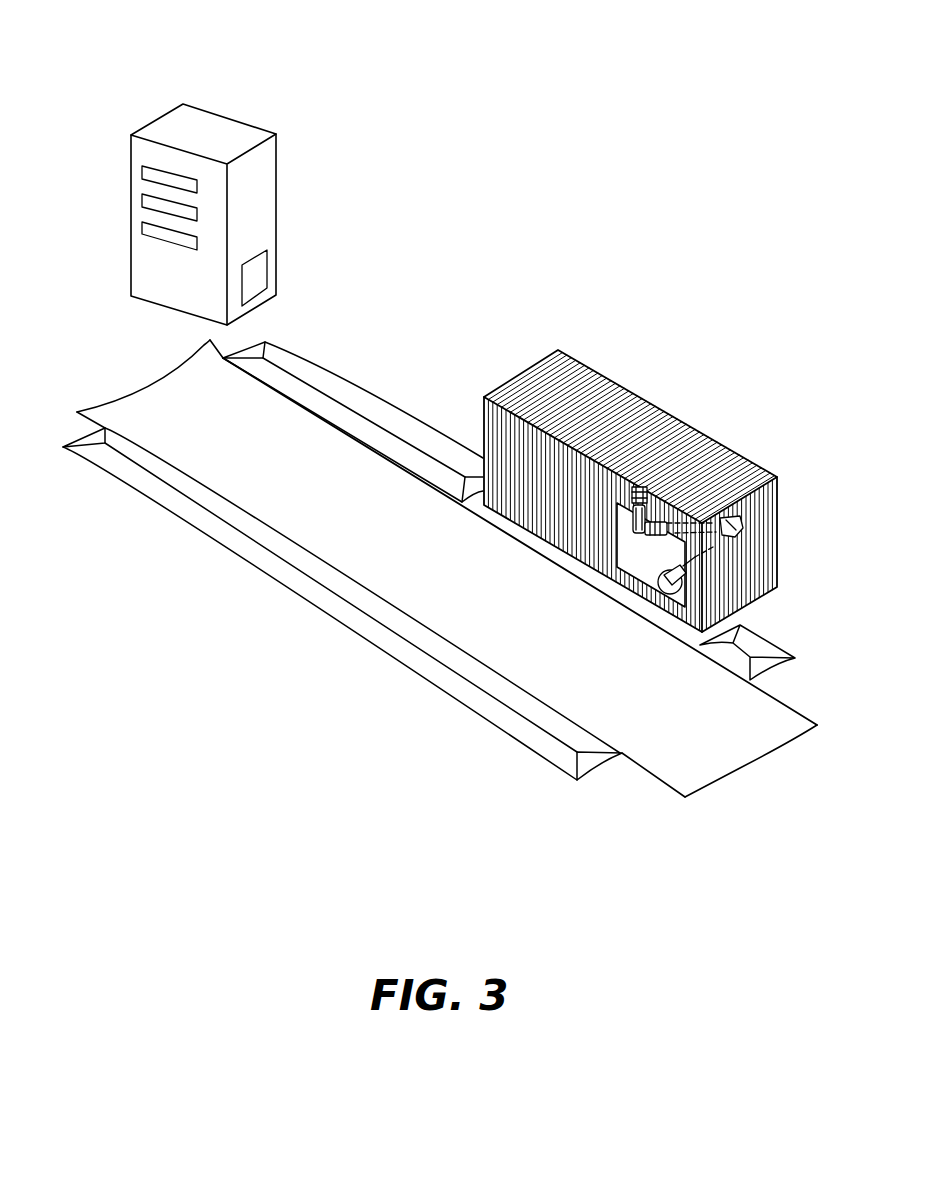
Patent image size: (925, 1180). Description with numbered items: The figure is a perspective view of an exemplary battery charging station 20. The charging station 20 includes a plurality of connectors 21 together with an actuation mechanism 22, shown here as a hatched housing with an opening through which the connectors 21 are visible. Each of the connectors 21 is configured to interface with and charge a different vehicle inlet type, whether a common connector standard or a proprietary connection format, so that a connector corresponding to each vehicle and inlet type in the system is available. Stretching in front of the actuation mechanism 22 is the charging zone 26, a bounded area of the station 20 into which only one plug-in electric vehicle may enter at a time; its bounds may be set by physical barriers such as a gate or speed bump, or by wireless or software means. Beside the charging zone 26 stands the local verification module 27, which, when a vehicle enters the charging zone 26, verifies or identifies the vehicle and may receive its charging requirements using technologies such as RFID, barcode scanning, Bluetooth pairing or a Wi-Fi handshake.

The battery charging station 20 is at (105, 73).
The connectors 21 is at (712, 548).
The actuation mechanism 22 is at (787, 466).
The charging zone 26 is at (697, 765).
The local verification module 27 is at (228, 115).